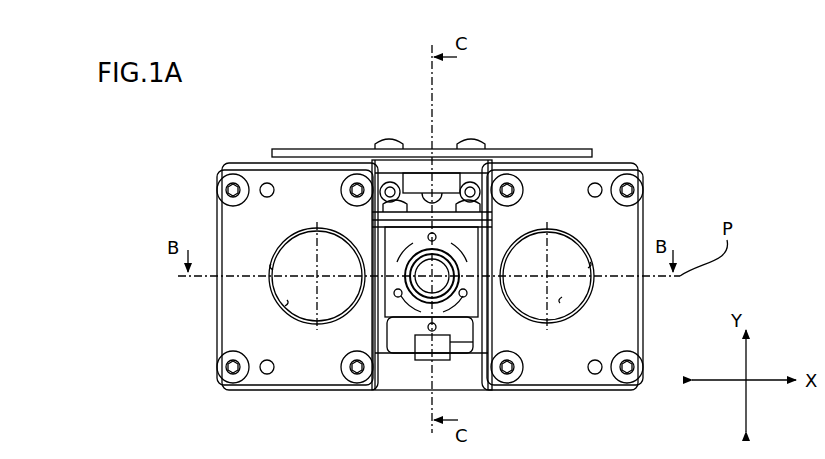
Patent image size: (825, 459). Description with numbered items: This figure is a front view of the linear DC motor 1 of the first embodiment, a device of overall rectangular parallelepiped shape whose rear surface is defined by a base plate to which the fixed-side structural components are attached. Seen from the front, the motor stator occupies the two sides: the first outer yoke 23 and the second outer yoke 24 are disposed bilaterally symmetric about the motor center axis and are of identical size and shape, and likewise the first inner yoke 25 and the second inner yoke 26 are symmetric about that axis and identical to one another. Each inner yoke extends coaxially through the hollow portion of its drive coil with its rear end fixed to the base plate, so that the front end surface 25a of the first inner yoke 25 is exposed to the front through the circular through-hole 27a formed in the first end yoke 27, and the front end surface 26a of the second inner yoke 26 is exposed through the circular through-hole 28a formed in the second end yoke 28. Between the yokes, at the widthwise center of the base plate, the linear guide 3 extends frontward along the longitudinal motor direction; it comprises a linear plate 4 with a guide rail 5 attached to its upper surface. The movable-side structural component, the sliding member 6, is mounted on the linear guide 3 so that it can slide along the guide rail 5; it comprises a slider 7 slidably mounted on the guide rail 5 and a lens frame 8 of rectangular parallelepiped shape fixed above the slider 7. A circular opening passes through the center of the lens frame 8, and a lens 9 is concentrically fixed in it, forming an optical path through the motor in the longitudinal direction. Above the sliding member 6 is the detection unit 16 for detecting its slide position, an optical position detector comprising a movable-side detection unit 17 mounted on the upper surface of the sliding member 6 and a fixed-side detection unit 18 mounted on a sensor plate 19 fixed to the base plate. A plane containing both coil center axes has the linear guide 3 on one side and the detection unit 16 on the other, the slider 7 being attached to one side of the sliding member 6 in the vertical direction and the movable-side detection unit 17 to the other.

The linear DC motor 1 is at (581, 118).
The linear guide 3 is at (539, 395).
The linear plate 4 is at (461, 381).
The guide rail 5 is at (444, 352).
The sliding member 6 is at (382, 334).
The slider 7 is at (400, 340).
The lens frame 8 is at (380, 296).
The lens 9 is at (418, 353).
The detection unit 16 is at (425, 80).
The movable-side detection unit 17 is at (410, 213).
The fixed-side detection unit 18 is at (412, 157).
The sensor plate 19 is at (423, 157).
The first outer yoke 23 is at (207, 302).
The second outer yoke 24 is at (652, 287).
The first inner yoke 25 is at (297, 262).
The front end surface 25a is at (271, 264).
The second inner yoke 26 is at (553, 283).
The front end surface 26a is at (560, 303).
The first end yoke 27 is at (236, 317).
The circular through-hole 27a is at (287, 300).
The second end yoke 28 is at (612, 222).
The circular through-hole 28a is at (590, 262).